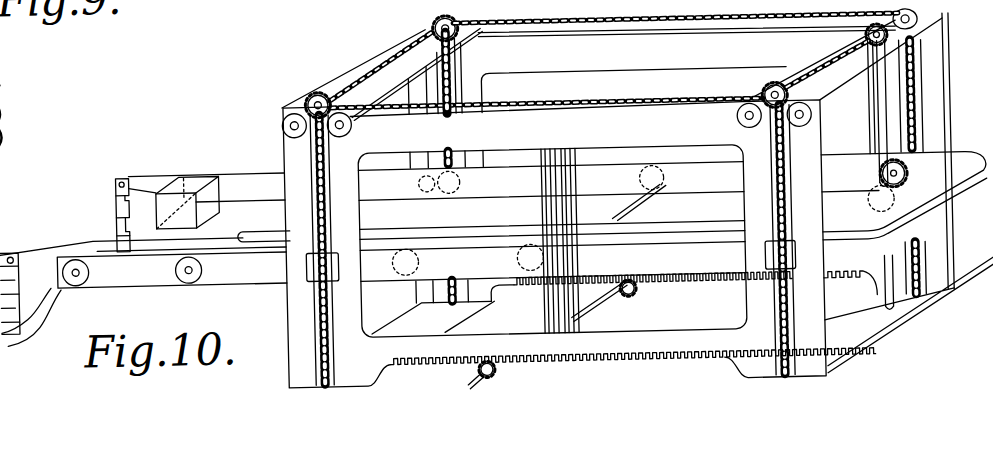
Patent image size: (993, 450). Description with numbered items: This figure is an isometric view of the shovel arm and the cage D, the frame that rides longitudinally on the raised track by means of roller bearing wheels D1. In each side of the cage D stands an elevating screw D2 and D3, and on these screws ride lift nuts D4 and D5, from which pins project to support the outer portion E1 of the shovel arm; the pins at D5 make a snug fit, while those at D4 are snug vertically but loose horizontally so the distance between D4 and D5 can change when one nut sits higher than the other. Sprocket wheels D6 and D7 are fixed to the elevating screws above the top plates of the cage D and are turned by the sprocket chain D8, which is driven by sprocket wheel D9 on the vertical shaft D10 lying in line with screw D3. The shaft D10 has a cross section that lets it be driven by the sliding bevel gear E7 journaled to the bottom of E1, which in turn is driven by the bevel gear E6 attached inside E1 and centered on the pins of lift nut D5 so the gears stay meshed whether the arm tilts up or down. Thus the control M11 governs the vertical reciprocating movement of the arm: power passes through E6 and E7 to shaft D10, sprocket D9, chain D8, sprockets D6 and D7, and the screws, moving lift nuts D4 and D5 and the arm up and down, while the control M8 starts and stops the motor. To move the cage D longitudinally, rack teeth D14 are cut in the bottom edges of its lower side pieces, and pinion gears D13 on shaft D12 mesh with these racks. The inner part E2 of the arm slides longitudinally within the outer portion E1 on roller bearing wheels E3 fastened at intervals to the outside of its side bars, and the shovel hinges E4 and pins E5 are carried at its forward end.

The cage D is at (288, 320).
The roller bearing wheels D1 is at (285, 117).
The elevating screw D2 is at (312, 136).
The elevating screw D3 is at (905, 128).
The lift nut D4 is at (308, 273).
The lift nut D5 is at (778, 261).
The sprocket wheel D6 is at (313, 93).
The sprocket wheel D7 is at (903, 18).
The sprocket chain D8 is at (795, 20).
The sprocket wheel D9 is at (870, 43).
The vertical shaft D10 is at (882, 100).
The shaft D12 is at (588, 316).
The pinion gears D13 is at (632, 295).
The rack teeth D14 is at (615, 362).
The outer portion of shovel arm E1 is at (702, 228).
The inner part of shovel arm E2 is at (240, 166).
The roller bearing wheels E3 is at (370, 220).
The shovel hinges E4 is at (20, 240).
The pins E5 is at (12, 274).
The bevel gear E6 is at (884, 180).
The bevel gear E7 is at (866, 215).
The control M8 is at (557, 174).
The control M11 is at (577, 174).